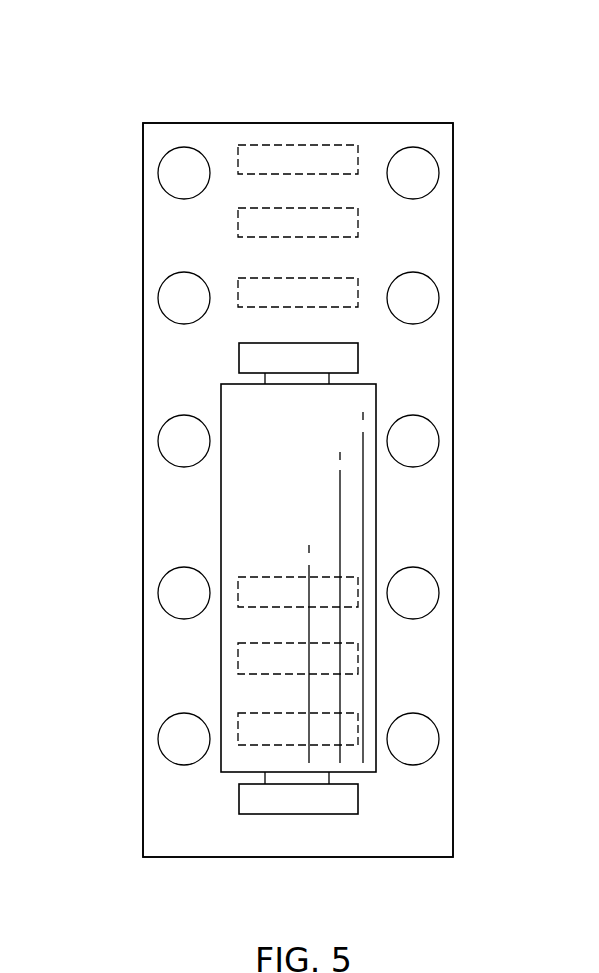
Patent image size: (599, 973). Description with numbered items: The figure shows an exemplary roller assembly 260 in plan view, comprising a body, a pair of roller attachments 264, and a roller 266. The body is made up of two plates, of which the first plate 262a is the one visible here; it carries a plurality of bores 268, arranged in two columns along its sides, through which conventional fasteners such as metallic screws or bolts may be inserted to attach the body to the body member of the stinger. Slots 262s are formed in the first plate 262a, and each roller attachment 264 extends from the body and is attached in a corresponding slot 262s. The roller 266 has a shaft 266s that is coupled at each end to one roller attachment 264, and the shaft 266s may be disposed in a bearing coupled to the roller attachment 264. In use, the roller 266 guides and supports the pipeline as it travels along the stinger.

The roller assembly 260 is at (143, 77).
The first plate 262a is at (443, 131).
The slot 262s is at (317, 147).
The roller attachment 264 is at (247, 361).
The roller 266 is at (237, 509).
The shaft 266s is at (318, 777).
The bore 268 is at (439, 733).